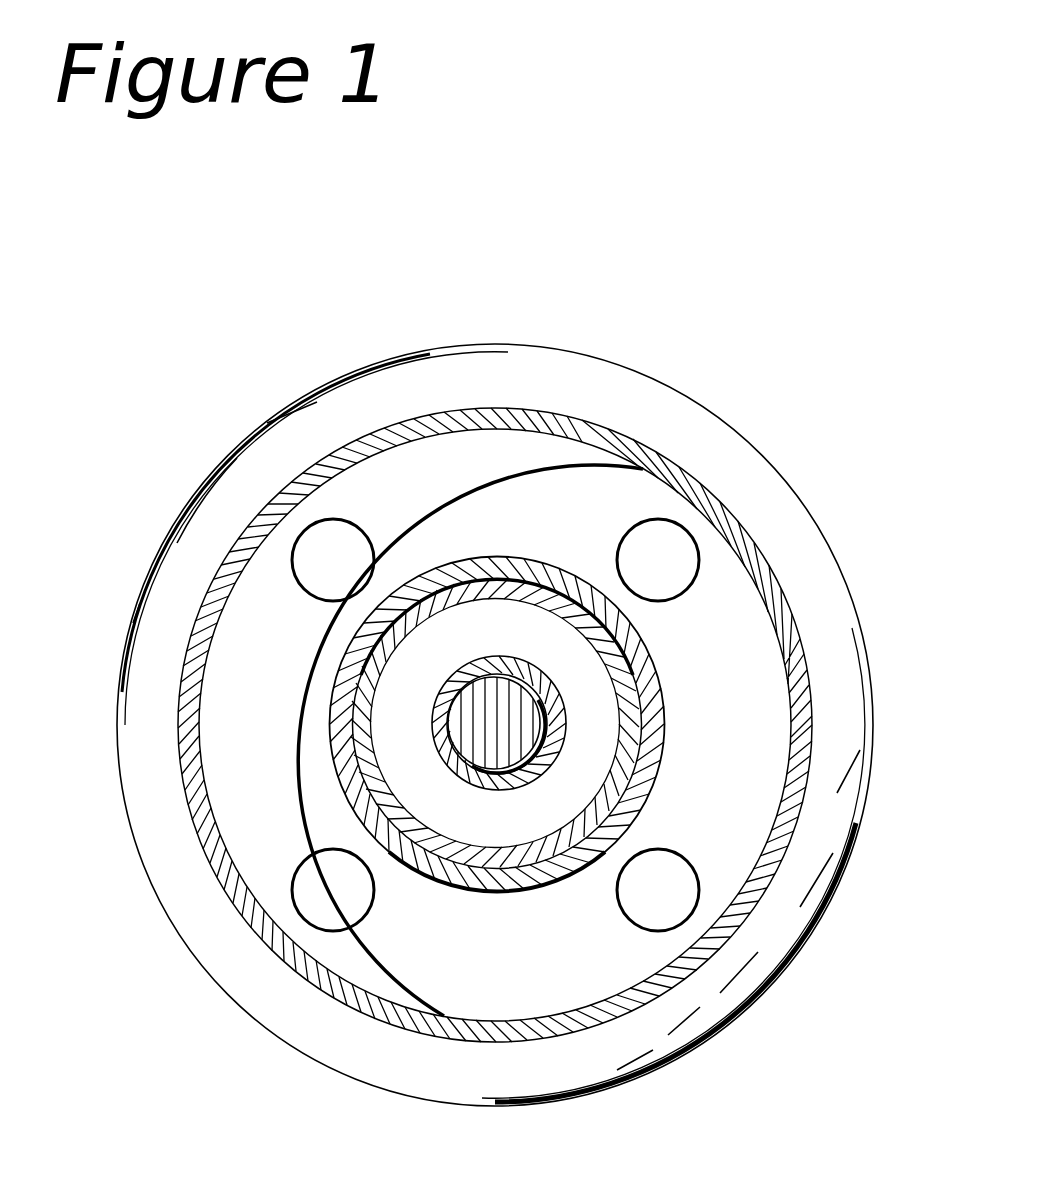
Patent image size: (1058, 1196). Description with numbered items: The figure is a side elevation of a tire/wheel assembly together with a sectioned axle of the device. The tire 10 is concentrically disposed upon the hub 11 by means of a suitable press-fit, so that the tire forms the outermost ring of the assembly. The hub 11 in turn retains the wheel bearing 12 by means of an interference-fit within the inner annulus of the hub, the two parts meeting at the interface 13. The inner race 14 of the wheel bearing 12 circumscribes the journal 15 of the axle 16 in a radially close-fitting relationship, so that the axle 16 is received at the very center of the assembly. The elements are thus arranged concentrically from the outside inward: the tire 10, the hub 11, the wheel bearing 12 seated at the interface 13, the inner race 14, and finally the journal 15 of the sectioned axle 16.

The tire 10 is at (682, 428).
The hub 11 is at (283, 637).
The wheel bearing 12 is at (459, 622).
The interface 13 is at (505, 572).
The inner race 14 is at (533, 678).
The journal 15 is at (448, 712).
The axle 16 is at (497, 723).